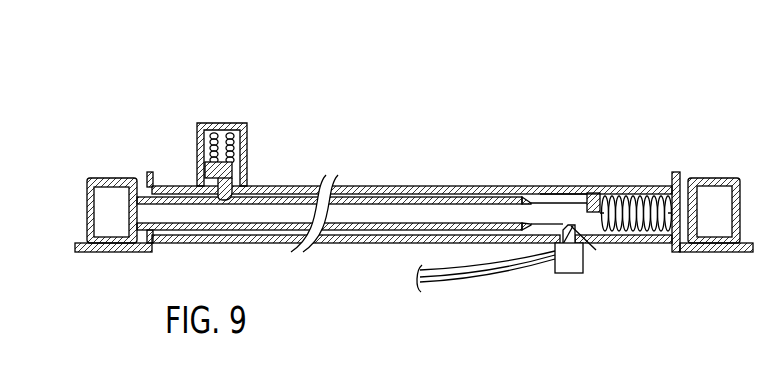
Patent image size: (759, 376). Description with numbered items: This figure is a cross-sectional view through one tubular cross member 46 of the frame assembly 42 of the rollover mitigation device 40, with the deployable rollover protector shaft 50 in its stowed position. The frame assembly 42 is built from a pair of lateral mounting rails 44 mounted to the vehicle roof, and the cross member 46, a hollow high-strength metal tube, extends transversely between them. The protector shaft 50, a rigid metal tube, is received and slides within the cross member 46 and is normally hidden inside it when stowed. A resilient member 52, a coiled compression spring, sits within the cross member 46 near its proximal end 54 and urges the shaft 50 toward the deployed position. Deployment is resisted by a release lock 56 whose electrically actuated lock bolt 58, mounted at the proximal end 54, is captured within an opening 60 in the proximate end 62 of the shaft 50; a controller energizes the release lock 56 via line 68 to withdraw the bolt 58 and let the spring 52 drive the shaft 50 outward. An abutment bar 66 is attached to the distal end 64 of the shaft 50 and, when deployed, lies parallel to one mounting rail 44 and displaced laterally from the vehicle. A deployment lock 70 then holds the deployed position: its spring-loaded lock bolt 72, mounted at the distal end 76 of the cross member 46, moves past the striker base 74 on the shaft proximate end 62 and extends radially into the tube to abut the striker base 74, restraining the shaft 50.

The rollover mitigation device 40 is at (416, 194).
The frame assembly 42 is at (480, 187).
The lateral mounting rails 44 is at (102, 252).
The tubular cross member 46 is at (377, 235).
The deployable rollover protector shaft 50 is at (232, 170).
The resilient member 52 is at (643, 229).
The proximal end 54 is at (642, 190).
The release lock 56 is at (568, 266).
The electrically actuated lock bolt 58 is at (578, 234).
The opening 60 is at (556, 244).
The proximate end 62 is at (557, 193).
The distal end 64 is at (178, 231).
The abutment bar 66 is at (107, 178).
The line 68 is at (447, 278).
The deployment lock 70 is at (232, 123).
The spring-loaded lock bolt 72 is at (260, 200).
The striker base 74 is at (592, 198).
The distal end 76 is at (212, 243).